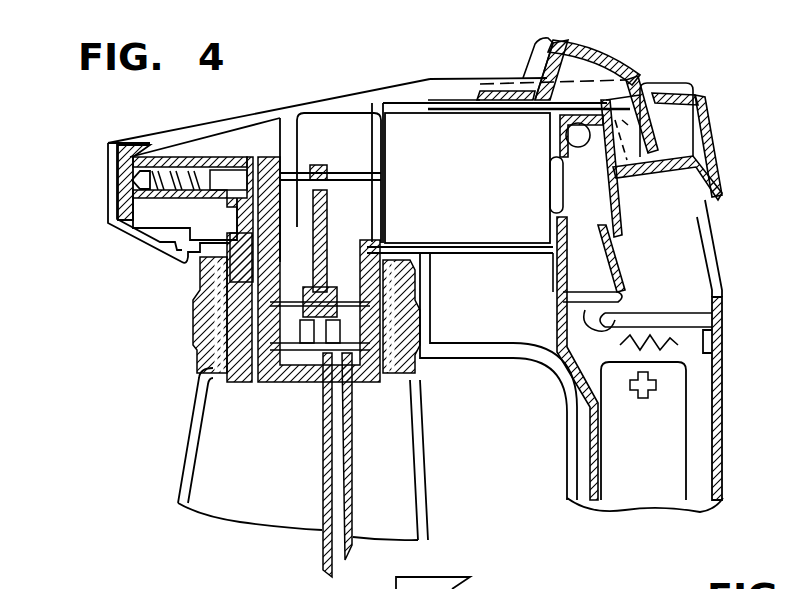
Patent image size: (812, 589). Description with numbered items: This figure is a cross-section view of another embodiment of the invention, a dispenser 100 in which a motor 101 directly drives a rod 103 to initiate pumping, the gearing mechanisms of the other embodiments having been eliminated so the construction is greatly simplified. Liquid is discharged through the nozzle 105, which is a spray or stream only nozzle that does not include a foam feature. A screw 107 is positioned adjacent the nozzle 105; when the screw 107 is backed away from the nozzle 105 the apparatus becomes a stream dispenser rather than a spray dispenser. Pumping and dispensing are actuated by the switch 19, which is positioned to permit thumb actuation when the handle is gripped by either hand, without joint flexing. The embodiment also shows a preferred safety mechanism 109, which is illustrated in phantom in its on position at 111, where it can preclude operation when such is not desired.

The dispenser 100 is at (155, 452).
The motor 101 is at (462, 223).
The rod 103 is at (345, 153).
The nozzle 105 is at (108, 177).
The screw 107 is at (185, 190).
The safety mechanism 109 is at (593, 62).
The safety mechanism in on position 111 is at (525, 64).
The switch 19 is at (718, 213).